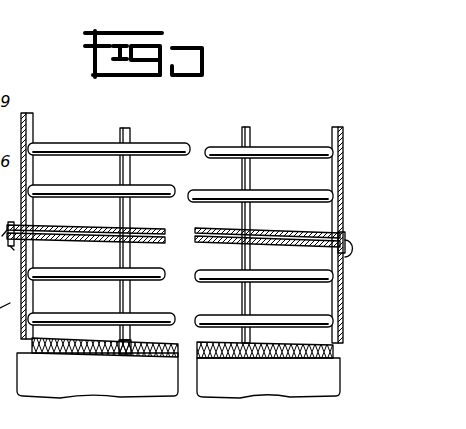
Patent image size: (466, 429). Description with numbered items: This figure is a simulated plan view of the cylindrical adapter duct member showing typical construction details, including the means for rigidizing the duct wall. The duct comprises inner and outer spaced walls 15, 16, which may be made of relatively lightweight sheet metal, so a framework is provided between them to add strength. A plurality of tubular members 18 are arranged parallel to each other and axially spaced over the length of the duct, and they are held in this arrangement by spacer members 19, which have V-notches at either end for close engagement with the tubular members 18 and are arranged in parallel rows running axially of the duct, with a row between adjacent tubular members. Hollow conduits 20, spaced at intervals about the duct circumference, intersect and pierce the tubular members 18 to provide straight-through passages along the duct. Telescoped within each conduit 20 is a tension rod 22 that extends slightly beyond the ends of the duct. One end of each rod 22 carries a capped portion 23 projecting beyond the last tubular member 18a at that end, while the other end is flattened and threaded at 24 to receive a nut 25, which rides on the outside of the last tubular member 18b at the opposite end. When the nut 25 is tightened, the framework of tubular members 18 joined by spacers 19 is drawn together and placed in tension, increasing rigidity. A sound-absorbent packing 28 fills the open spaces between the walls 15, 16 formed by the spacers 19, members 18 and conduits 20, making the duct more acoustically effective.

The inner wall 15 is at (90, 339).
The outer wall 16 is at (60, 384).
The tubular member 18 is at (125, 297).
The last tubular member 18a is at (333, 137).
The last tubular member 18b is at (34, 126).
The spacer member 19 is at (78, 311).
The conduit 20 is at (145, 244).
The tension rod 22 is at (145, 232).
The capped portion 23 is at (338, 259).
The threaded portion 24 is at (7, 222).
The nut 25 is at (7, 255).
The sound-absorbent packing 28 is at (143, 354).